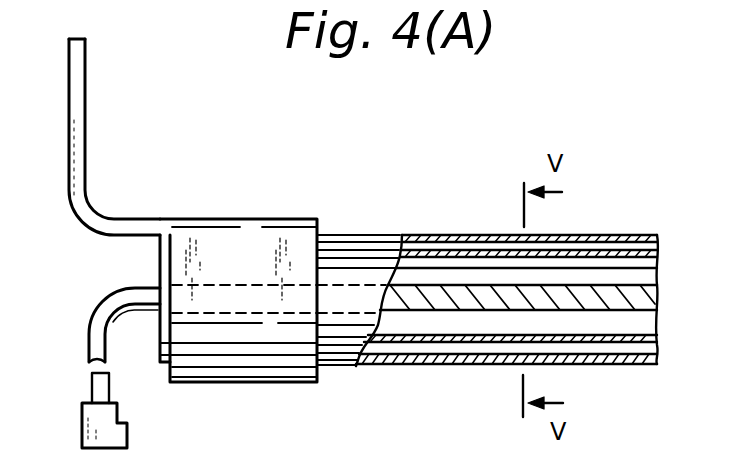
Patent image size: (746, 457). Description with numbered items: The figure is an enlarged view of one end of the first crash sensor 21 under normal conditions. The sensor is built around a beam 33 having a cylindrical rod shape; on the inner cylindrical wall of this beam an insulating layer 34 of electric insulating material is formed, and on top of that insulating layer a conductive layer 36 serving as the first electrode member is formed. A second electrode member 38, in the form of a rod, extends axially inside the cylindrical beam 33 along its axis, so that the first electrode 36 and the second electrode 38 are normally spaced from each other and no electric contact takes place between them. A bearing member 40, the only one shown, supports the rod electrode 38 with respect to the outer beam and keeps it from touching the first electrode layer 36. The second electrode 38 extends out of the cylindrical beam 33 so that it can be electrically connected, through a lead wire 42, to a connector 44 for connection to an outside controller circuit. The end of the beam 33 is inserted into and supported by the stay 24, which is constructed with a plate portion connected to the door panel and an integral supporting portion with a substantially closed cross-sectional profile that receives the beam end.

The first crash sensor 21 is at (429, 236).
The stay 24 is at (85, 146).
The beam 33 is at (616, 234).
The insulating layer 34 is at (583, 233).
The first electrode member 36 is at (657, 251).
The second electrode member 38 is at (640, 298).
The bearing member 40 is at (158, 363).
The lead wire 42 is at (93, 321).
The connector 44 is at (82, 425).